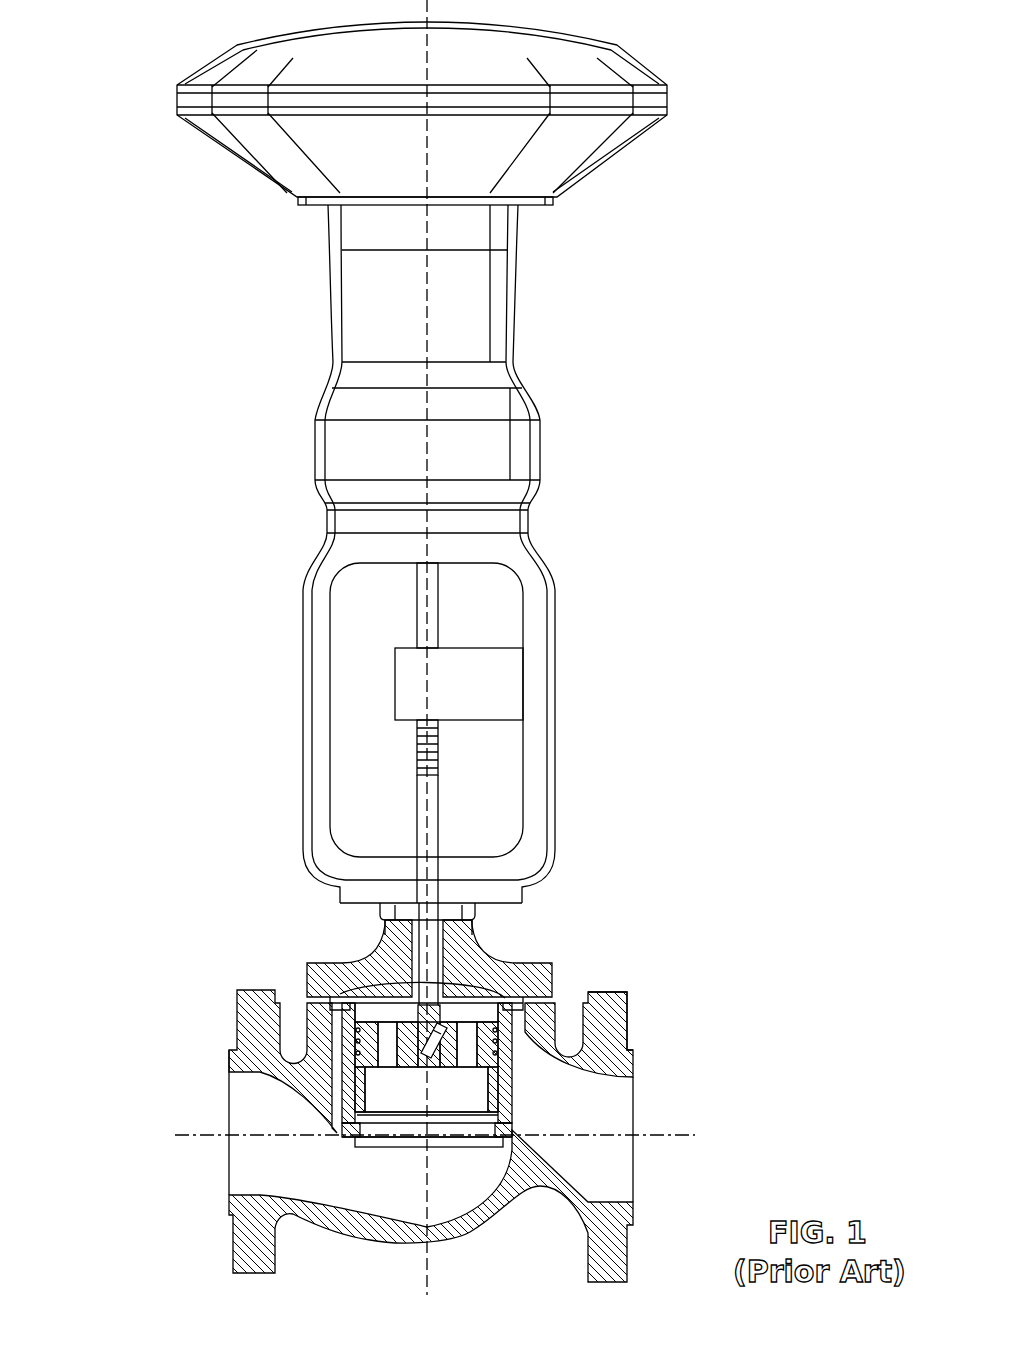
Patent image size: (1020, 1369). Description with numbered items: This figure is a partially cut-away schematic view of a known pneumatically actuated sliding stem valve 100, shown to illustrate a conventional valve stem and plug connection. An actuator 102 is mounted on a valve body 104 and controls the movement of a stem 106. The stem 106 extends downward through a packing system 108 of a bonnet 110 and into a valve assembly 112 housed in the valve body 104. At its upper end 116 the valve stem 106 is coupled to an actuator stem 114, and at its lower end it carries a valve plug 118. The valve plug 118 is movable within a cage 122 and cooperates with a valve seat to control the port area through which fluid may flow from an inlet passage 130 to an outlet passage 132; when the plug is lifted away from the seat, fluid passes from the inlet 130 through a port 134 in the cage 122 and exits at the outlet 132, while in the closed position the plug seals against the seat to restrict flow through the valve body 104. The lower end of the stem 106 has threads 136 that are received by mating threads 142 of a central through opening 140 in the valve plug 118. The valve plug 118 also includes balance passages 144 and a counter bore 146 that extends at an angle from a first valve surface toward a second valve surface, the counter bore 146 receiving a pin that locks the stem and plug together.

The sliding stem valve 100 is at (150, 45).
The actuator 102 is at (540, 453).
The valve body 104 is at (252, 1012).
The stem 106 is at (413, 816).
The packing system 108 is at (443, 952).
The bonnet 110 is at (383, 968).
The valve assembly 112 is at (225, 1057).
The actuator stem 114 is at (413, 637).
The upper end 116 is at (413, 737).
The valve plug 118 is at (388, 1100).
The cage 122 is at (550, 1017).
The inlet passage 130 is at (240, 1146).
The outlet passage 132 is at (618, 1173).
The port 134 is at (497, 1113).
The threads 136 is at (420, 1055).
The central through opening 140 is at (432, 1067).
The threads 142 is at (410, 983).
The balance passages 144 is at (467, 1053).
The counter bore 146 is at (438, 1047).